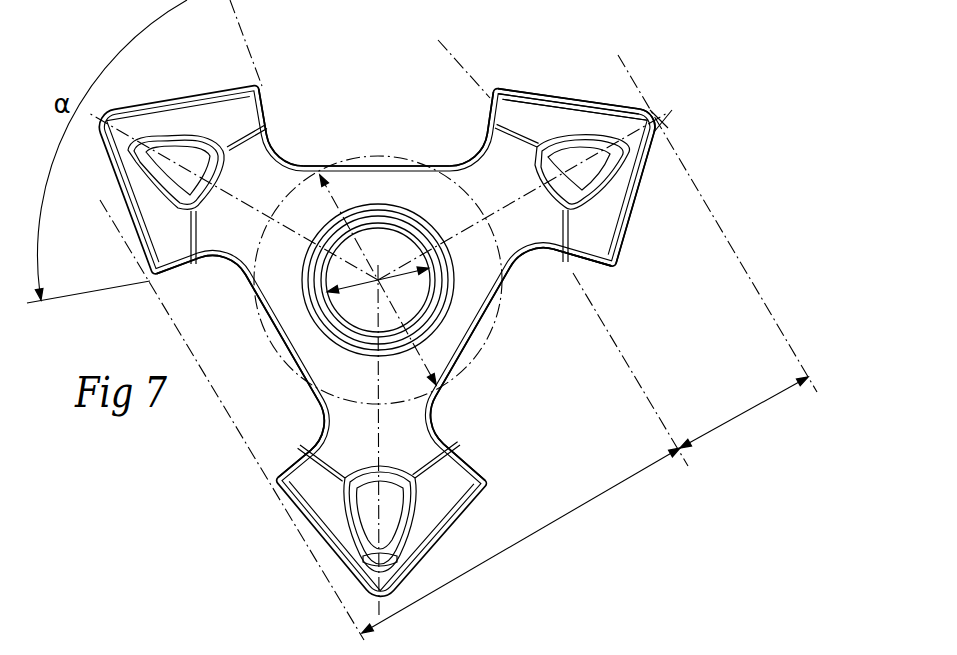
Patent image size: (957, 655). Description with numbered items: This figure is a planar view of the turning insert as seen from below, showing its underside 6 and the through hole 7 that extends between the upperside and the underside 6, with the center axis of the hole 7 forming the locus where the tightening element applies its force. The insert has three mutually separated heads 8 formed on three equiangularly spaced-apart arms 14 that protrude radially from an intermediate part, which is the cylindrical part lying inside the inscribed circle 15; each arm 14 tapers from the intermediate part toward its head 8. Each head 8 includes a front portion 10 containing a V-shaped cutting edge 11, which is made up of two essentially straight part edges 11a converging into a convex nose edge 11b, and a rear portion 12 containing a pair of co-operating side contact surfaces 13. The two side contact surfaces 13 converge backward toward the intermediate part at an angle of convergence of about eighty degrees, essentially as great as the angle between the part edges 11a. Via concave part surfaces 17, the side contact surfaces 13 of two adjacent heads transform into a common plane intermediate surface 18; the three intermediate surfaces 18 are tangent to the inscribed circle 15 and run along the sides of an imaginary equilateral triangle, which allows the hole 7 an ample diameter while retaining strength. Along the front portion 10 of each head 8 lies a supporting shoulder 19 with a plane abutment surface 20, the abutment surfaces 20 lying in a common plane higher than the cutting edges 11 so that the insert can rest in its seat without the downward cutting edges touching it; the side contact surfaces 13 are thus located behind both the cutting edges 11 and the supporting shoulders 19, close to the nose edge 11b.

The underside 6 is at (468, 197).
The through hole 7 is at (415, 290).
The head 8 is at (621, 278).
The front portion 10 is at (567, 120).
The cutting edge 11 is at (568, 88).
The part edge 11a is at (527, 88).
The nose edge 11b is at (662, 120).
The rear portion 12 is at (488, 156).
The side contact surface 13 is at (274, 106).
The arm 14 is at (281, 174).
The inscribed circle 15 is at (347, 396).
The concave part surface 17 is at (230, 278).
The intermediate surface 18 is at (358, 164).
The supporting shoulder 19 is at (400, 512).
The abutment surface 20 is at (368, 512).